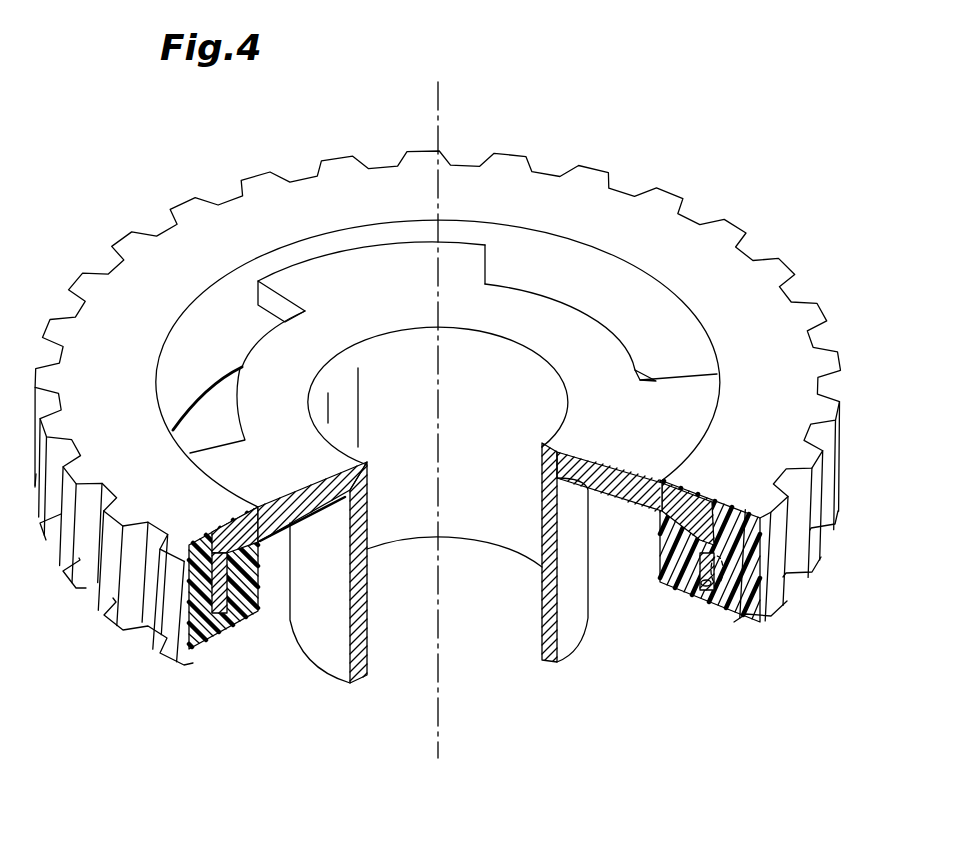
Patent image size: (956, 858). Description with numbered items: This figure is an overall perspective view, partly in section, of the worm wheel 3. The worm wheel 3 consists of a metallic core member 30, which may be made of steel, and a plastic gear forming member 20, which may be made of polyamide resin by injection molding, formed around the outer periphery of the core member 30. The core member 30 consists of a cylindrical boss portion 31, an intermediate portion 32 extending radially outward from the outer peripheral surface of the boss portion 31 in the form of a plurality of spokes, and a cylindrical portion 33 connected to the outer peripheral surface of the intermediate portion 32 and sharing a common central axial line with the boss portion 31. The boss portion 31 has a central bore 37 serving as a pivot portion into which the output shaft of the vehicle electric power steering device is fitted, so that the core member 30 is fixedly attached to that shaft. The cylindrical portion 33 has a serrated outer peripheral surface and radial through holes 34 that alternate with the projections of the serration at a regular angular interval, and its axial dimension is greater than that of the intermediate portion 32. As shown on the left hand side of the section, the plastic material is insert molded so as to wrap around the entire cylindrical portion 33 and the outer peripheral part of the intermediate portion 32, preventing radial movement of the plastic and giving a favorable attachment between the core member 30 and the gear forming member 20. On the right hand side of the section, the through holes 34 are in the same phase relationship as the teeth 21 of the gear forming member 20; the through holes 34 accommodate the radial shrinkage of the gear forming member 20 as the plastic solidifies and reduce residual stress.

The worm wheel 3 is at (619, 95).
The gear forming member 20 is at (665, 245).
The teeth 21 is at (802, 573).
The core member 30 is at (282, 710).
The cylindrical boss portion 31 is at (302, 628).
The intermediate portion 32 is at (693, 393).
The cylindrical portion 33 is at (218, 616).
The through holes 34 is at (702, 578).
The central bore 37 is at (513, 380).